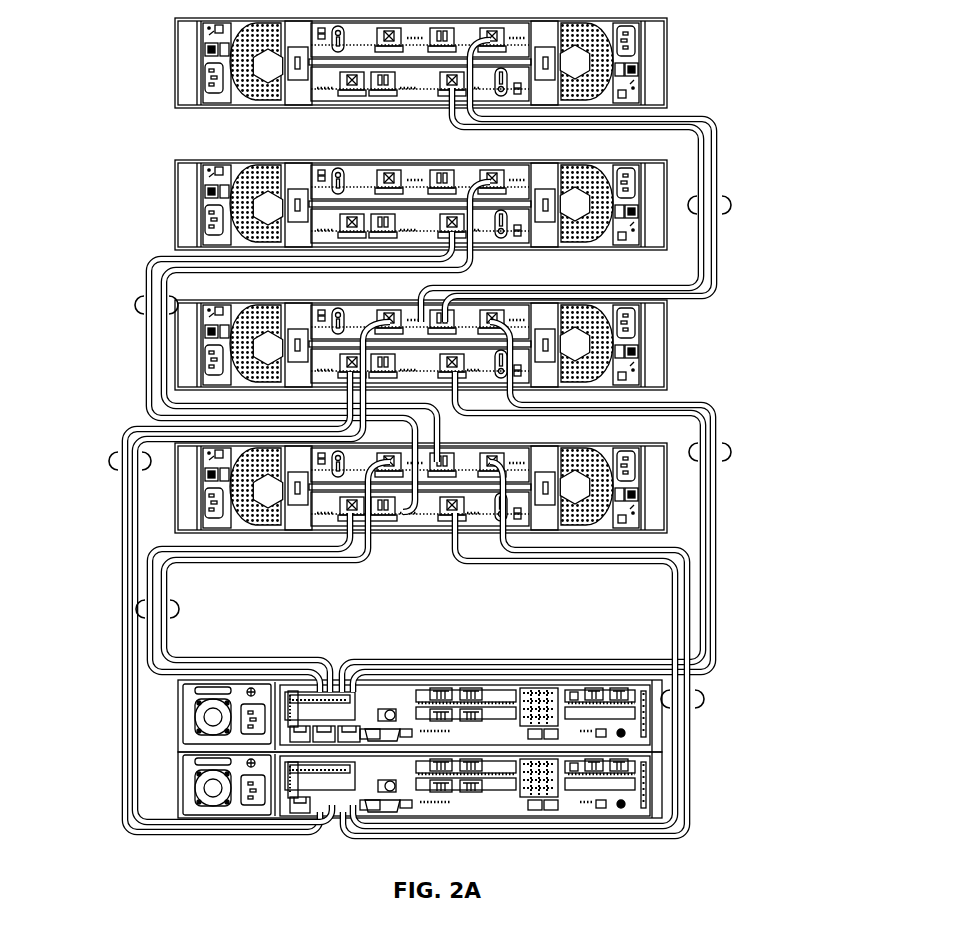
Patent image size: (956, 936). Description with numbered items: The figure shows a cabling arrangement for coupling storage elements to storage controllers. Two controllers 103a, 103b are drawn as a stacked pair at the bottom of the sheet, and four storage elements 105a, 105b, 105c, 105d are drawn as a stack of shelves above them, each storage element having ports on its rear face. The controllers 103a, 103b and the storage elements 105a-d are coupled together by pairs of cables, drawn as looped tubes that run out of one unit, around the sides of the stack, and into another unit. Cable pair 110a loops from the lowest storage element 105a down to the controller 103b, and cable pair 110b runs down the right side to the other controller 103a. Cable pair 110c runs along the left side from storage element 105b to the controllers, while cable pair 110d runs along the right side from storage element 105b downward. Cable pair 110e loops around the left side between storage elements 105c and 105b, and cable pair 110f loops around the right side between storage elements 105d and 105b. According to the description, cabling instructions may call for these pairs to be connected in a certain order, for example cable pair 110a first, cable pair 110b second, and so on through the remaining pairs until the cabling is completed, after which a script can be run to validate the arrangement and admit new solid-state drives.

The controller 103a is at (662, 806).
The controller 103b is at (662, 738).
The storage element 105a is at (604, 447).
The storage element 105b is at (670, 340).
The storage element 105c is at (612, 250).
The storage element 105d is at (670, 70).
The cable pair 110a is at (130, 611).
The cable pair 110b is at (708, 701).
The cable pair 110c is at (108, 463).
The cable pair 110d is at (734, 453).
The cable pair 110e is at (130, 307).
The cable pair 110f is at (734, 206).